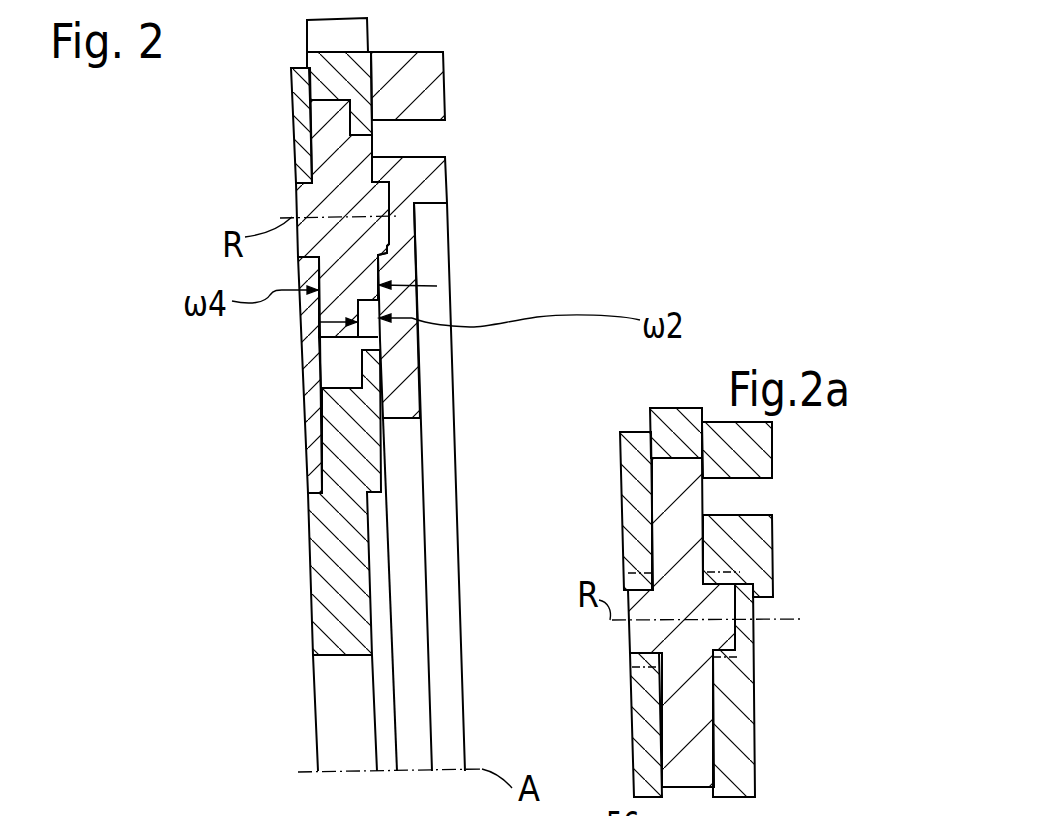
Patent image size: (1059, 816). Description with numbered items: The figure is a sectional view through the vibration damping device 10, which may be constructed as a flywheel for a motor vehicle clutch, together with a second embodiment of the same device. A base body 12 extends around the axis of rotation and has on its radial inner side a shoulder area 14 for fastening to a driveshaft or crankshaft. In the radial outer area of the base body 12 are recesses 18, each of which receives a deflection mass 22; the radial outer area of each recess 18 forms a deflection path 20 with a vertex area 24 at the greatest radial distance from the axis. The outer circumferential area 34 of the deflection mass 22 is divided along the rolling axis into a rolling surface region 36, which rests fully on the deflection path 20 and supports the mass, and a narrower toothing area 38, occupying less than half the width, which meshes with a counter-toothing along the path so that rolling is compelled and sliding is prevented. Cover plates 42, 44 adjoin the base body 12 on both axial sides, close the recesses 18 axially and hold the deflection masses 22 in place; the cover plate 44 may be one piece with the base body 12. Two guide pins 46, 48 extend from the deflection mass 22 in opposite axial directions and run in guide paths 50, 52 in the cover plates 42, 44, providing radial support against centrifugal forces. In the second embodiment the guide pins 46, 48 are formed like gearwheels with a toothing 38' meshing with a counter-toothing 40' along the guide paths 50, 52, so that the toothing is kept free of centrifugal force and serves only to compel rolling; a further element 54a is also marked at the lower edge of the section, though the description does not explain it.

In FIG. 2, the vibration damping device 10 is at (545, 215).
In FIG. 2, the base body 12 is at (392, 457).
In FIG. 2, the shoulder area 14 is at (308, 562).
In FIG. 2, the recesses 18 is at (343, 380).
In FIG. 2, the deflection path 20 is at (323, 93).
In FIG. 2A, the deflection path 20 is at (677, 460).
In FIG. 2, the deflection mass 22 is at (372, 212).
In FIG. 2A, the deflection mass 22 is at (693, 513).
In FIG. 2, the vertex area 24 is at (241, 807).
In FIG. 2, the outer circumferential area 34 is at (340, 337).
In FIG. 2, the rolling surface region 36 is at (320, 350).
In FIG. 2, the toothing area 38 is at (488, 328).
In FIG. 2A, the toothing 38' is at (790, 618).
In FIG. 2A, the counter-toothing 40' is at (776, 556).
In FIG. 2, the cover plate 42 is at (300, 317).
In FIG. 2A, the cover plate 42 is at (642, 745).
In FIG. 2, the cover plate 44 is at (412, 394).
In FIG. 2A, the cover plate 44 is at (745, 774).
In FIG. 2, the guide pin 46 is at (389, 244).
In FIG. 2A, the guide pin 46 is at (739, 627).
In FIG. 2, the guide pin 48 is at (300, 195).
In FIG. 2A, the guide pin 48 is at (640, 637).
In FIG. 2, the guide path 50 is at (412, 323).
In FIG. 2A, the guide path 50 is at (741, 732).
In FIG. 2, the guide path 52 is at (300, 270).
In FIG. 2A, the guide path 52 is at (642, 703).
In FIG. 2, the bore section 54a is at (405, 804).